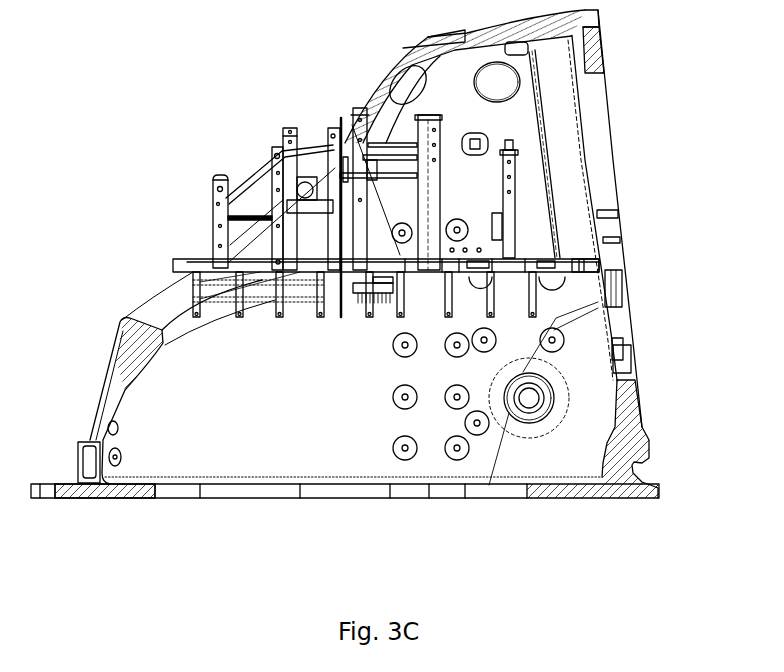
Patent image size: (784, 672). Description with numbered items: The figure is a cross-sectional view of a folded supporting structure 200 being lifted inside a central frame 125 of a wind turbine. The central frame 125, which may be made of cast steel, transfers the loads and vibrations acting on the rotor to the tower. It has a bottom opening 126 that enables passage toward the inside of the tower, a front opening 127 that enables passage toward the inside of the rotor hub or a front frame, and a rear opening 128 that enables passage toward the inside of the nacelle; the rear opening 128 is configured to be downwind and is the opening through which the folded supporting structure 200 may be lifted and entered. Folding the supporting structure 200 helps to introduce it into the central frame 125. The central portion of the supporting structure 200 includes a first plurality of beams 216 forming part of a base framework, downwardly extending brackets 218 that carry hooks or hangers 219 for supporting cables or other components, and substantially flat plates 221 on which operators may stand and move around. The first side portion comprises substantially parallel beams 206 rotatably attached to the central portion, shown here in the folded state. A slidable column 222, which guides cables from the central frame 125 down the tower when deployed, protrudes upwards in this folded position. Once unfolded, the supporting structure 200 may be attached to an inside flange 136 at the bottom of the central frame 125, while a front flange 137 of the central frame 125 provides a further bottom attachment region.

The central frame 125 is at (565, 133).
The bottom opening 126 is at (426, 510).
The front opening 127 is at (648, 325).
The rear opening 128 is at (148, 293).
The inside flange 136 is at (130, 500).
The front flange 137 is at (605, 52).
The supporting structure 200 is at (262, 145).
The beams 206 is at (512, 192).
The first plurality of beams 216 is at (572, 265).
The brackets 218 is at (285, 310).
The hooks or hangers 219 is at (263, 303).
The plates 221 is at (253, 200).
The column 222 is at (347, 130).